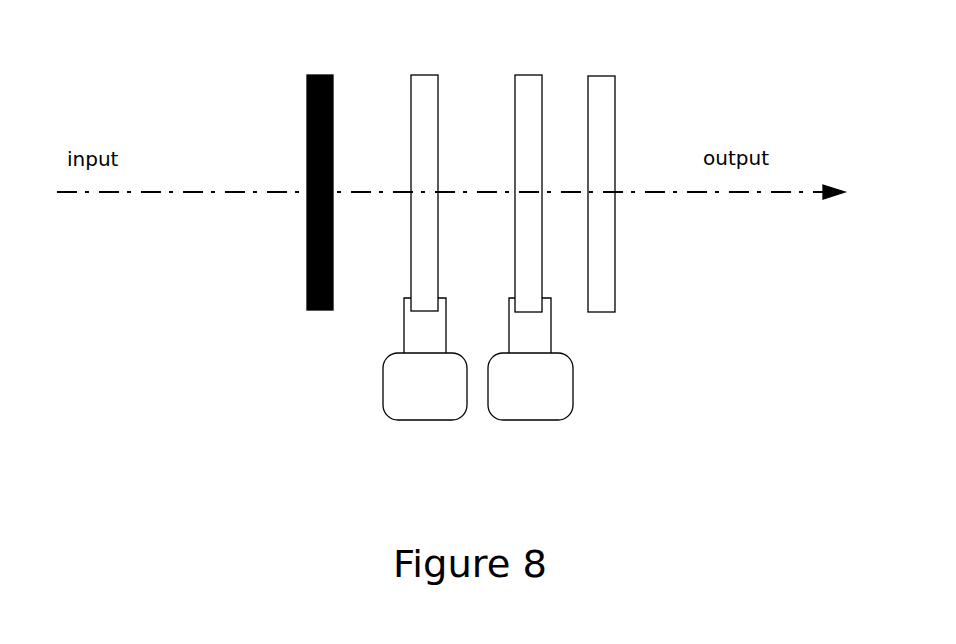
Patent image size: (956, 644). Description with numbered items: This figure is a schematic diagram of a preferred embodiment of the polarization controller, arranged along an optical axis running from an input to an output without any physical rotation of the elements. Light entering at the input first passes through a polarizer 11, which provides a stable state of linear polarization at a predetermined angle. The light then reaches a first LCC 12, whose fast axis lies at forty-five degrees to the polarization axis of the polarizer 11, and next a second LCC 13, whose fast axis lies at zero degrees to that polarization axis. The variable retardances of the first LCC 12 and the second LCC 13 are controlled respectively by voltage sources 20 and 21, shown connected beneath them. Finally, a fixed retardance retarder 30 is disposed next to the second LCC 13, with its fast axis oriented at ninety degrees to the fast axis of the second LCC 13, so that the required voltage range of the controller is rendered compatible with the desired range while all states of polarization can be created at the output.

The polarizer 11 is at (325, 60).
The first LCC 12 is at (420, 60).
The second LCC 13 is at (535, 60).
The fixed retardance retarder 30 is at (613, 60).
The voltage source 20 is at (382, 420).
The voltage source 21 is at (583, 405).